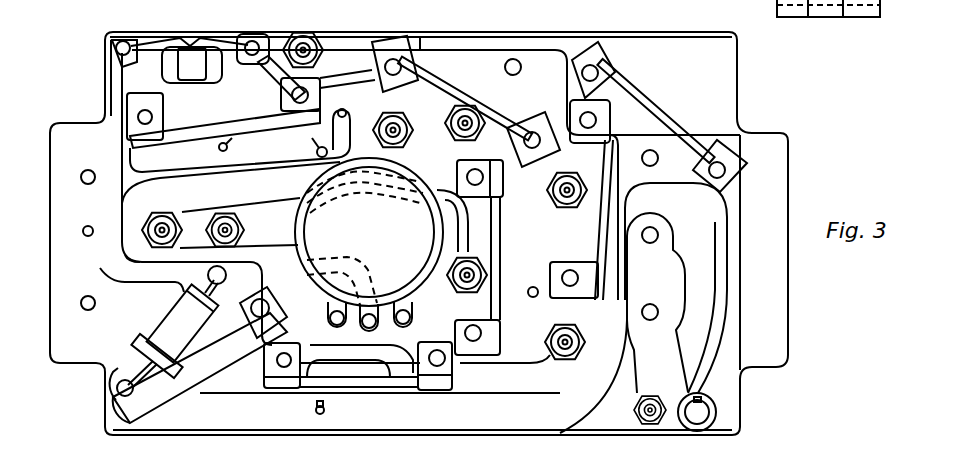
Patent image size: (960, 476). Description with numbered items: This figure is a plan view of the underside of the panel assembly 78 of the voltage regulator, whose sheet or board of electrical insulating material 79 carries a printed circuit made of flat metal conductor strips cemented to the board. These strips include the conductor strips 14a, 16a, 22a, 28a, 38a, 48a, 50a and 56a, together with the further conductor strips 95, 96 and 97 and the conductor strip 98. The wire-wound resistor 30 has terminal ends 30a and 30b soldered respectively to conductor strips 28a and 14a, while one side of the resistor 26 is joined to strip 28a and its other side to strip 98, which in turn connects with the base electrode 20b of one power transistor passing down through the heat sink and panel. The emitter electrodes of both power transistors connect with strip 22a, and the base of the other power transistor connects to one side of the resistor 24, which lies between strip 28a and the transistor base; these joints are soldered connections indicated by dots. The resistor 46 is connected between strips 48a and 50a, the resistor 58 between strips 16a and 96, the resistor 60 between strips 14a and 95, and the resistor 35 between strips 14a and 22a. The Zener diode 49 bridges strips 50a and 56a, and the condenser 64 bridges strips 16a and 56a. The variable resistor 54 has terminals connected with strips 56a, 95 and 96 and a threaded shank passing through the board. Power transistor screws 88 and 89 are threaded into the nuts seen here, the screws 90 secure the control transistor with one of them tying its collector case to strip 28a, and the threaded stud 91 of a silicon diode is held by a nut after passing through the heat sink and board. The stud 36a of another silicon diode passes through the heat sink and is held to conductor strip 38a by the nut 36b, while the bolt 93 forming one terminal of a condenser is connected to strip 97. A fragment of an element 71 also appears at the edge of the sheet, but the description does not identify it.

The conductor strip 14a is at (728, 202).
The conductor strip 16a is at (425, 391).
The base electrode 20b is at (535, 288).
The conductor strip 22a is at (231, 205).
The resistor 24 is at (493, 97).
The resistor 26 is at (603, 205).
The conductor strip 28a is at (485, 45).
The resistor 30 is at (650, 88).
The terminal end 30a is at (580, 62).
The terminal end 30b is at (730, 172).
The resistor 35 is at (500, 227).
The stud 36a is at (710, 410).
The nut 36b is at (658, 390).
The conductor strip 38a is at (700, 293).
The resistor 46 is at (192, 127).
The conductor strip 48a is at (240, 140).
The Zener diode 49 is at (188, 58).
The conductor strip 50a is at (332, 85).
The variable resistor 54 is at (430, 282).
The conductor strip 56a is at (130, 258).
The resistor 58 is at (208, 367).
The resistor 60 is at (387, 385).
The condenser 64 is at (168, 315).
The housing 71 is at (880, 10).
The panel assembly 78 is at (792, 140).
The panel board 79 is at (725, 88).
The screws 88 is at (460, 272).
The screws 89 is at (470, 126).
The screws 90 is at (307, 48).
The threaded stud 91 is at (160, 226).
The bolt 93 is at (233, 233).
The conductor strip 95 is at (345, 360).
The conductor strip 96 is at (338, 345).
The conductor strip 97 is at (462, 218).
The conductor strip 98 is at (560, 298).